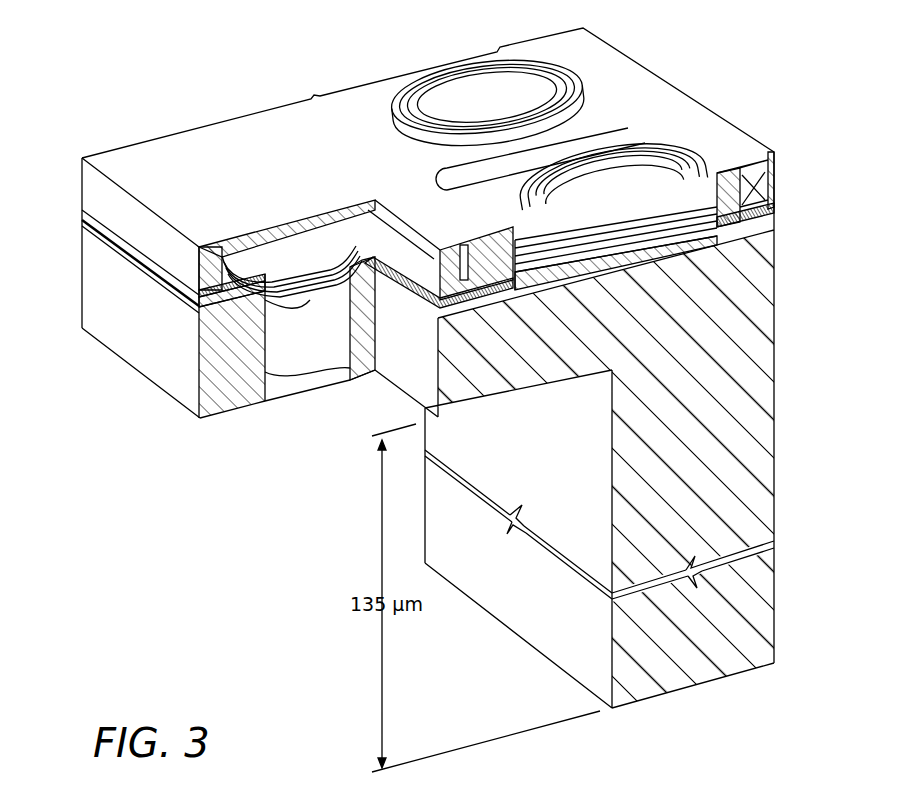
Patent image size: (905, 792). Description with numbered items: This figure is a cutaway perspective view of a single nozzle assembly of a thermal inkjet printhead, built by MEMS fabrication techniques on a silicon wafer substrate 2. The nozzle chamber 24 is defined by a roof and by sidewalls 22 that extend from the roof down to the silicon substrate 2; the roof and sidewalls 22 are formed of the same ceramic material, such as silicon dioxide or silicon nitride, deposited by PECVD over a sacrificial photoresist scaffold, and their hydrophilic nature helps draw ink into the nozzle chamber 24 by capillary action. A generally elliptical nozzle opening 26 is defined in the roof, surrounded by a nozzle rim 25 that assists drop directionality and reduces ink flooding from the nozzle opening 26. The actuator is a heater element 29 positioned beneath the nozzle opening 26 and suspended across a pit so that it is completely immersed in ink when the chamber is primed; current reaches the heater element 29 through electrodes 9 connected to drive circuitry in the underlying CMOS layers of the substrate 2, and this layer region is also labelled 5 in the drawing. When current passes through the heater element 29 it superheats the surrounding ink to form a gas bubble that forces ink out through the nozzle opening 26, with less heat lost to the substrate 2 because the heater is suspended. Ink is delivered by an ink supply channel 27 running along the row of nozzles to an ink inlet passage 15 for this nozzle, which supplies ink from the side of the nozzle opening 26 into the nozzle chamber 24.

The silicon wafer substrate 2 is at (772, 387).
The CMOS drive circuitry layer 5 is at (777, 212).
The electrodes 9 is at (780, 168).
The ink inlet passage 15 is at (300, 345).
The sidewalls 22 is at (110, 205).
The nozzle chamber 24 is at (616, 237).
The nozzle rim 25 is at (650, 147).
The nozzle opening 26 is at (465, 90).
The ink supply channel 27 is at (277, 523).
The heater element 29 is at (700, 248).